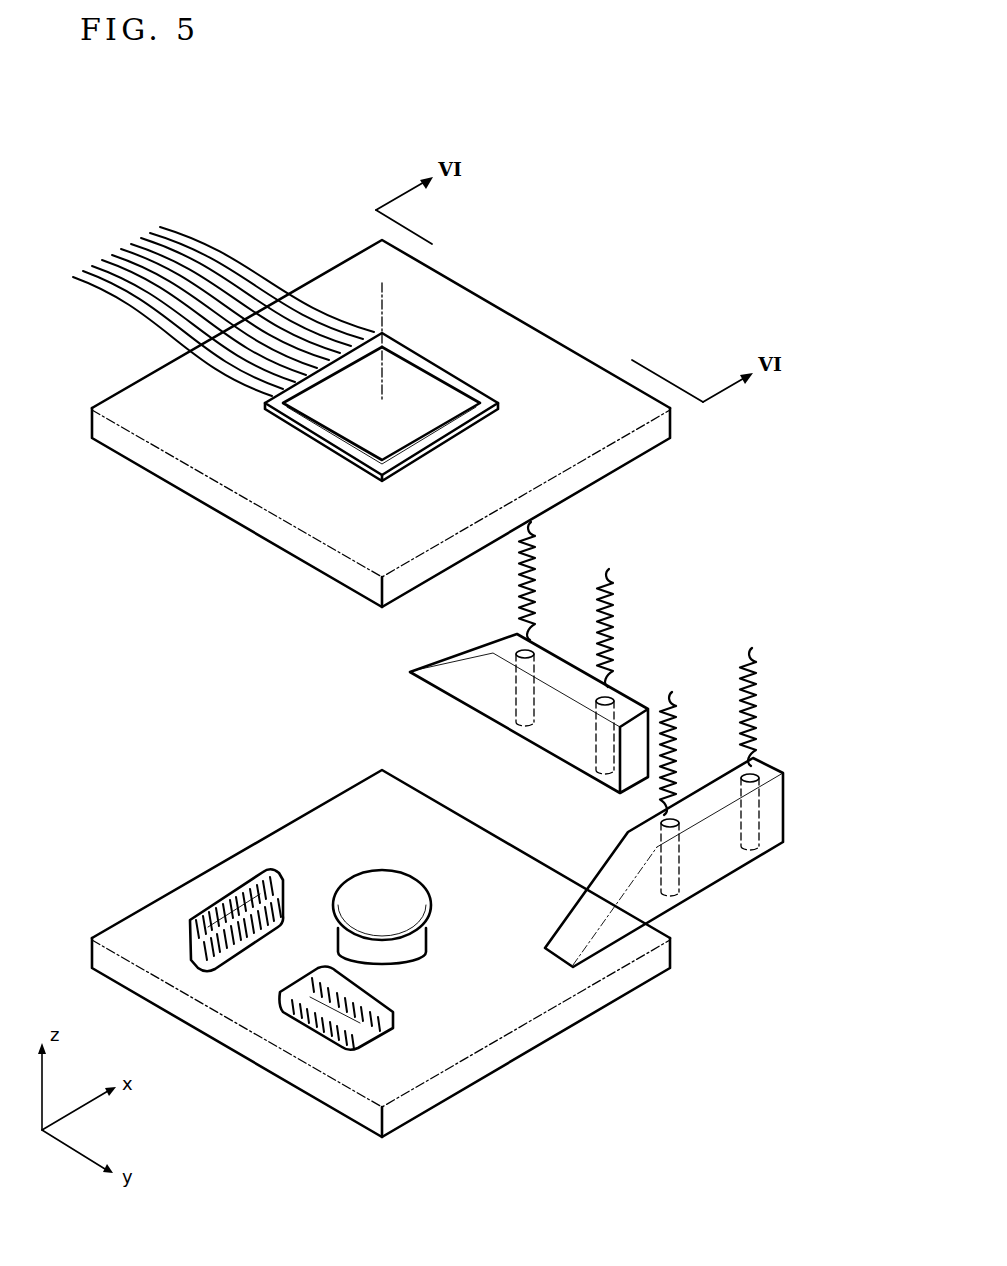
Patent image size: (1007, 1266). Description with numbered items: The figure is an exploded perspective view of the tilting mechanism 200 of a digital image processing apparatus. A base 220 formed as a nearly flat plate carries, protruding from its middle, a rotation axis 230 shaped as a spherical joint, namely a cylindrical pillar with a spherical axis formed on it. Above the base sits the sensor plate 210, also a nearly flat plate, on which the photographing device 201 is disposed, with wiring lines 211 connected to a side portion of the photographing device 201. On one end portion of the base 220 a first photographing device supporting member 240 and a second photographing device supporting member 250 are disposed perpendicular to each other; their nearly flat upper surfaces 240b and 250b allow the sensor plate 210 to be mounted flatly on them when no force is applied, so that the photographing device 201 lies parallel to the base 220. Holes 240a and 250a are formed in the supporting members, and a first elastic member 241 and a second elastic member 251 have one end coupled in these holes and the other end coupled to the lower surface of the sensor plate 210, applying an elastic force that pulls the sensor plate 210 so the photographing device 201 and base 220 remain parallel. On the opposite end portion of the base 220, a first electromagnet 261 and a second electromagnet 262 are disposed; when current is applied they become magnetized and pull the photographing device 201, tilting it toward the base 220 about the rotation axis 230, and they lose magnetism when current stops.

The tilting mechanism 200 is at (633, 199).
The photographing device 201 is at (418, 400).
The sensor plate 210 is at (345, 270).
The wiring lines 211 is at (176, 248).
The base 220 is at (488, 1022).
The rotation axis 230 is at (373, 877).
The first photographing device supporting member 240 is at (512, 758).
The hole 240a is at (608, 698).
The upper surface 240b is at (560, 670).
The first elastic member 241 is at (605, 580).
The second photographing device supporting member 250 is at (741, 884).
The hole 250a is at (752, 777).
The upper surface 250b is at (713, 800).
The second elastic member 251 is at (746, 657).
The first electromagnet 261 is at (225, 895).
The second electromagnet 262 is at (320, 1036).